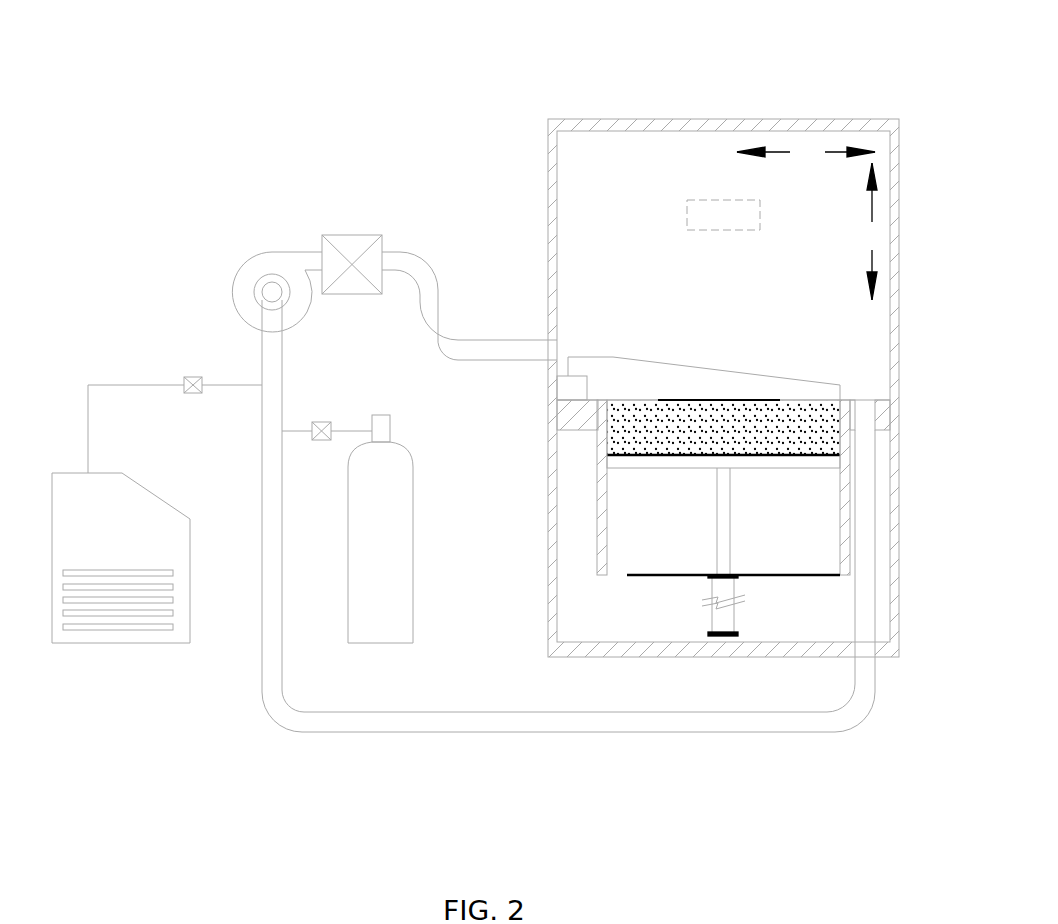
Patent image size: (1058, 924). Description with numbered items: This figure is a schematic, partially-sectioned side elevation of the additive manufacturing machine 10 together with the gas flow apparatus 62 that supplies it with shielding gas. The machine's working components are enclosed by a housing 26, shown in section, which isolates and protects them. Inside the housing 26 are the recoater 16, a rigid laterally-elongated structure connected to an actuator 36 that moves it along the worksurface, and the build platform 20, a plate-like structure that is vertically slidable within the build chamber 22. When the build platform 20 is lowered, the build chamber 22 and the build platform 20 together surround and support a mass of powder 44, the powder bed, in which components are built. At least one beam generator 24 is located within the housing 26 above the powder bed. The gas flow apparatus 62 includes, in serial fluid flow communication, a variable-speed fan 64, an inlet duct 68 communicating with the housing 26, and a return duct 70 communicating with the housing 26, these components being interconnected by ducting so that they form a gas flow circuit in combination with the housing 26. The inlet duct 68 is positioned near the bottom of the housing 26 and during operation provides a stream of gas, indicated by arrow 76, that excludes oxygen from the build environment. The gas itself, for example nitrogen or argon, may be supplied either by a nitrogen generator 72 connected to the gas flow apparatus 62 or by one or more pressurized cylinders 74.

The additive manufacturing machine 10 is at (692, 58).
The recoater 16 is at (645, 392).
The build platform 20 is at (665, 458).
The build chamber 22 is at (845, 544).
The beam generator 24 is at (708, 197).
The housing 26 is at (897, 182).
The actuator 36 is at (572, 392).
The powder 44 is at (736, 441).
The gas flow apparatus 62 is at (208, 252).
The variable-speed fan 64 is at (362, 235).
The inlet duct 68 is at (422, 272).
The return duct 70 is at (742, 722).
The nitrogen generator 72 is at (122, 540).
The pressurized cylinder 74 is at (399, 522).
The arrow 76 is at (542, 350).